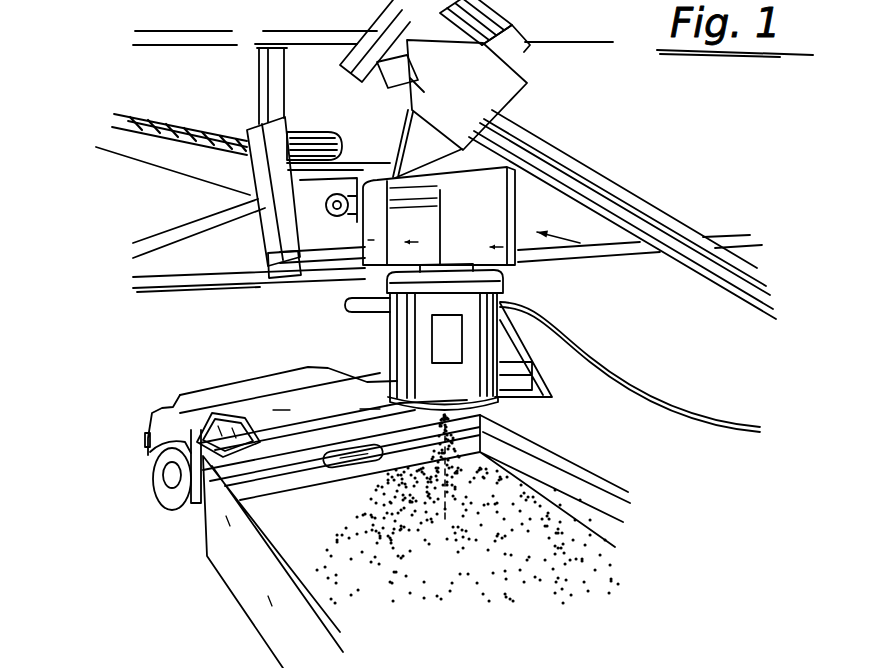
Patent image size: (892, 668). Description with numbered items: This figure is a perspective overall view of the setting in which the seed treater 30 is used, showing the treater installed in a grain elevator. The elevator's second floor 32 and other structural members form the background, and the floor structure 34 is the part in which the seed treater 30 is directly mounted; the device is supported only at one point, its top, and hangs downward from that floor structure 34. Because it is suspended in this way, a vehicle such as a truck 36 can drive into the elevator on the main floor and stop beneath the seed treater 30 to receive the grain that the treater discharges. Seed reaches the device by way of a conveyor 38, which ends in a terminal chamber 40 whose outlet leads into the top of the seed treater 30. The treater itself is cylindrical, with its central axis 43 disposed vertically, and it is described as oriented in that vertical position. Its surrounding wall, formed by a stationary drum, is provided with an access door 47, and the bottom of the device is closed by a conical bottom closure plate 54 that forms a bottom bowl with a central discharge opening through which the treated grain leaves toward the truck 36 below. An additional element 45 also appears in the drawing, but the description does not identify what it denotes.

The seed treater 30 is at (531, 348).
The second floor 32 is at (108, 113).
The floor structure 34 is at (166, 290).
The truck 36 is at (199, 535).
The conveyor 38 is at (193, 167).
The terminal chamber 40 is at (600, 253).
The central axis 43 is at (468, 485).
The nozzle 45 is at (433, 228).
The access door 47 is at (465, 347).
The conical bottom closure plate 54 is at (521, 432).